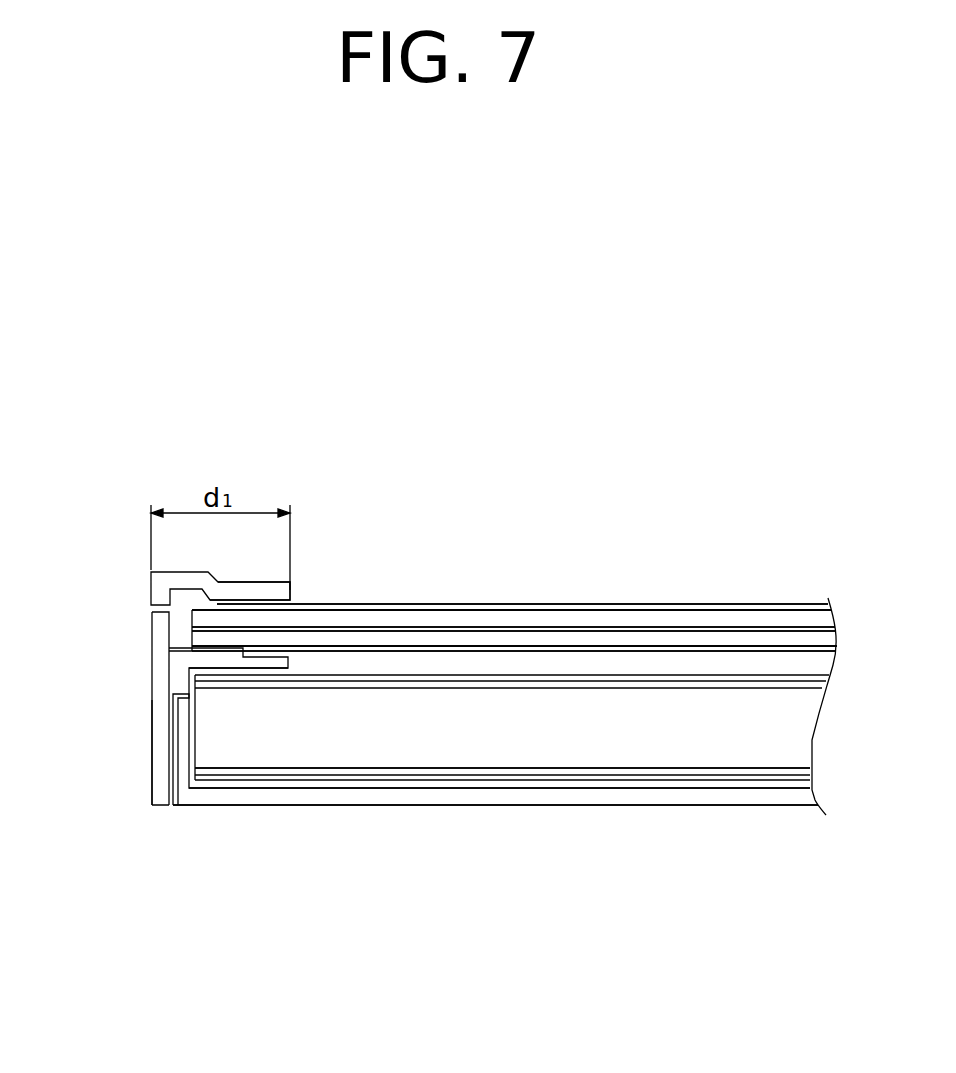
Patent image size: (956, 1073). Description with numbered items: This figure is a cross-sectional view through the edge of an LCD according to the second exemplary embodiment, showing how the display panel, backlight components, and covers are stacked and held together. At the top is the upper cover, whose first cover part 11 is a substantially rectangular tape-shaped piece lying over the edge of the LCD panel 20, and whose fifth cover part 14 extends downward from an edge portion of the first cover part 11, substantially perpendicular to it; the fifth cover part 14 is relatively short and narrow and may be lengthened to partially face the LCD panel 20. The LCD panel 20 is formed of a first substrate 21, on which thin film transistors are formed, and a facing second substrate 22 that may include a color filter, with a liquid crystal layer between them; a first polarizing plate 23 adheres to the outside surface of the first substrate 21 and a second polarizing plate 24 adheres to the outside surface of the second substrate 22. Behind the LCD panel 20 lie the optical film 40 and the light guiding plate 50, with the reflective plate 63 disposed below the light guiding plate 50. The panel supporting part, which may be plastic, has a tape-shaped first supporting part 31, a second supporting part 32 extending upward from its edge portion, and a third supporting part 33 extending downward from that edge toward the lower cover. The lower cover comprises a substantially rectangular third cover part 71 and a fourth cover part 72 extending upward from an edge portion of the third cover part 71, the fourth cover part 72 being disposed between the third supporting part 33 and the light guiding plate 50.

The first cover part 11 is at (292, 588).
The fifth cover part 14 is at (150, 600).
The LCD panel 20 is at (780, 503).
The first substrate 21 is at (664, 637).
The second substrate 22 is at (733, 618).
The first polarizing plate 23 is at (790, 645).
The second polarizing plate 24 is at (597, 604).
The first supporting part 31 is at (215, 657).
The second supporting part 32 is at (150, 648).
The third supporting part 33 is at (150, 762).
The optical film 40 is at (484, 678).
The light guiding plate 50 is at (370, 745).
The reflective plate 63 is at (562, 778).
The third cover part 71 is at (455, 797).
The fourth cover part 72 is at (172, 714).